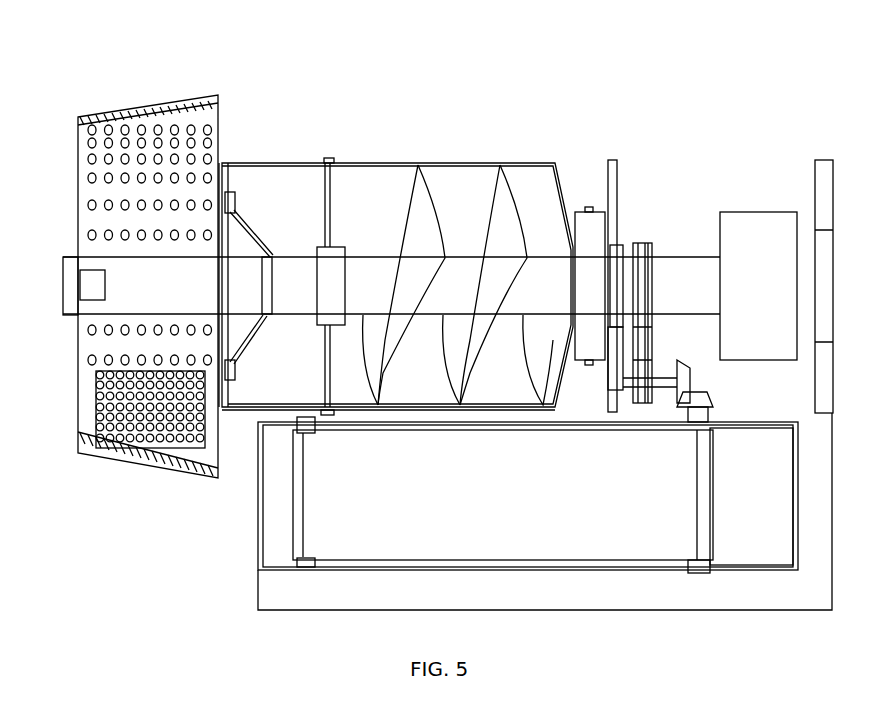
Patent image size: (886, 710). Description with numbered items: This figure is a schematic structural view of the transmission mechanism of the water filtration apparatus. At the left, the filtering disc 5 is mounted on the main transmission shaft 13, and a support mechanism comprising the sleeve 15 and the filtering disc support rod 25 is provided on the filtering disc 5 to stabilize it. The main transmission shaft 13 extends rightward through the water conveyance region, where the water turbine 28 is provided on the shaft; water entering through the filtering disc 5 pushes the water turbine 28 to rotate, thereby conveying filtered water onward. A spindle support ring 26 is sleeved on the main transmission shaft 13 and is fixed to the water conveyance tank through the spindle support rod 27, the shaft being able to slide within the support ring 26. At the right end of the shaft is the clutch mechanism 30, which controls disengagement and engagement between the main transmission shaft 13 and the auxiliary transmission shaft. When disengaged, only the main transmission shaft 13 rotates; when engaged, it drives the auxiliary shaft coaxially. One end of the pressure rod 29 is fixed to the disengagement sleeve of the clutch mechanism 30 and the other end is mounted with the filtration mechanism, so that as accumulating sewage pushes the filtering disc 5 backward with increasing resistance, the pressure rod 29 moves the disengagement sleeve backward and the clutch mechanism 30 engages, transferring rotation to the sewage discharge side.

The filtering disc 5 is at (216, 170).
The main transmission shaft 13 is at (283, 290).
The sleeve 15 is at (250, 296).
The filtering disc support rod 25 is at (260, 222).
The support ring 26 is at (335, 252).
The spindle support rod 27 is at (334, 372).
The water turbine 28 is at (425, 223).
The pressure rod 29 is at (421, 417).
The clutch mechanism 30 is at (599, 217).